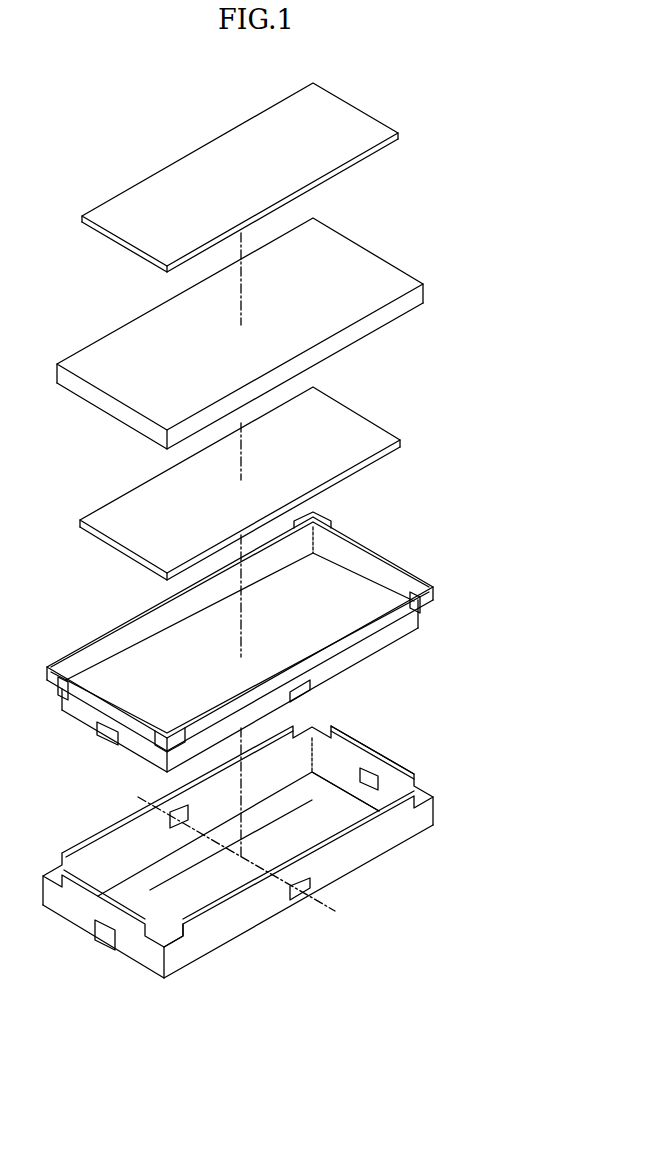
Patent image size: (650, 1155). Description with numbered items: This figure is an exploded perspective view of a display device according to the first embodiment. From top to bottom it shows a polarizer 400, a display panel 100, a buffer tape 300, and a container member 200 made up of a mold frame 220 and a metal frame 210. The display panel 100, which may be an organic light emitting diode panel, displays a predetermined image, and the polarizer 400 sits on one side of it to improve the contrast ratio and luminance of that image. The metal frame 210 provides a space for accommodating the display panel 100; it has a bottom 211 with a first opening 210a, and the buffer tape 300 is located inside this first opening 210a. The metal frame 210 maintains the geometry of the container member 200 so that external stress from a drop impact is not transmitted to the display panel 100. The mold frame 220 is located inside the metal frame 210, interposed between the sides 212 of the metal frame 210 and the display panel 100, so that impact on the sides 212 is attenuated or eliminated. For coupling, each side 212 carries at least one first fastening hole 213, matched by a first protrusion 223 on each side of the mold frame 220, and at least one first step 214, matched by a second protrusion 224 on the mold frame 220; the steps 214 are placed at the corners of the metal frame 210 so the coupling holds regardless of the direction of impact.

The polarizer 400 is at (357, 120).
The display panel 100 is at (357, 272).
The buffer tape 300 is at (352, 432).
The container member 200 is at (510, 543).
The mold frame 220 is at (360, 568).
The first protrusion 223 is at (311, 694).
The second protrusion 224 is at (185, 735).
The metal frame 210 is at (466, 713).
The bottom 211 is at (380, 795).
The side 212 is at (352, 750).
The first opening 210a is at (308, 824).
The first fastening hole 213 is at (316, 889).
The first step 214 is at (190, 932).